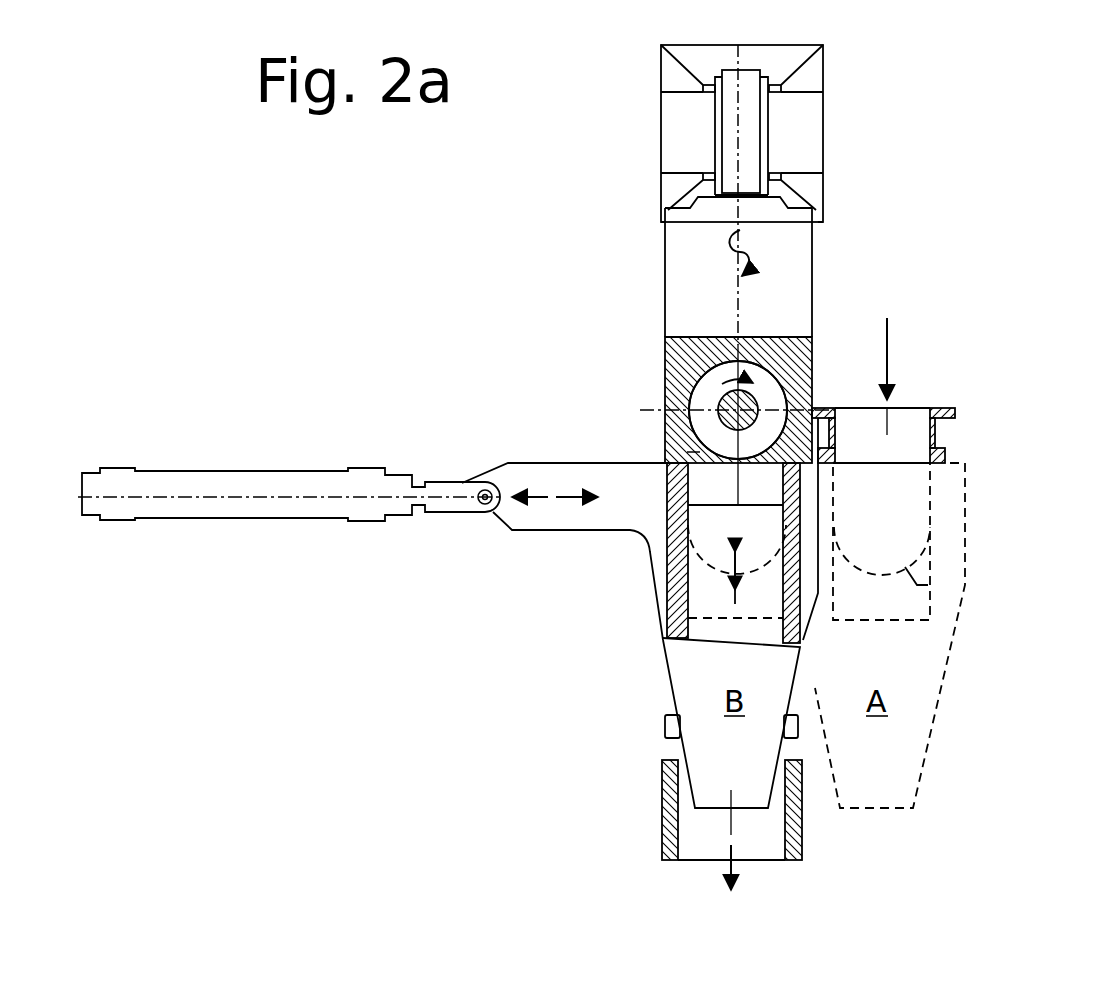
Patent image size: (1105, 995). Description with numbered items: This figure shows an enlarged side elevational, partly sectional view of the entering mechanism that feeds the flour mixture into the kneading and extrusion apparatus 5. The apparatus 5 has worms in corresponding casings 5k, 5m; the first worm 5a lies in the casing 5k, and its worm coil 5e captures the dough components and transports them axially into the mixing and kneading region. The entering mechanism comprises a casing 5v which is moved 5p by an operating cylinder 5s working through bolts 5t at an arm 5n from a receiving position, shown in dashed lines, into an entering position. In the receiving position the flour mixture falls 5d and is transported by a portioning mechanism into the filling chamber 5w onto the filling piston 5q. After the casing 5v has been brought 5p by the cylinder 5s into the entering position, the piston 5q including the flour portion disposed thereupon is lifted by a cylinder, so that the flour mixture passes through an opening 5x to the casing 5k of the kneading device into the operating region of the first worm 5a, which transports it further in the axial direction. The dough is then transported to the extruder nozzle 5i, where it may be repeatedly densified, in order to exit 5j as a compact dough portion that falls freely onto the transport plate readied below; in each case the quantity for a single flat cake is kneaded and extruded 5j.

The kneading and extrusion apparatus 5 is at (657, 296).
The casing 5m is at (683, 246).
The casing 5k is at (682, 353).
The first worm 5a is at (725, 393).
The worm coil 5e is at (697, 432).
The opening 5x is at (687, 452).
The filling piston 5q is at (710, 483).
The movement of the casing 5p is at (537, 497).
The arm 5n is at (493, 530).
The bolts 5t is at (493, 510).
The operating cylinder 5s is at (183, 518).
The passage of the flour mixture 5d is at (887, 377).
The filling chamber 5w is at (883, 512).
The casing 5v is at (800, 657).
The extruder nozzle 5i is at (798, 725).
The exit of the dough portion 5j is at (731, 872).